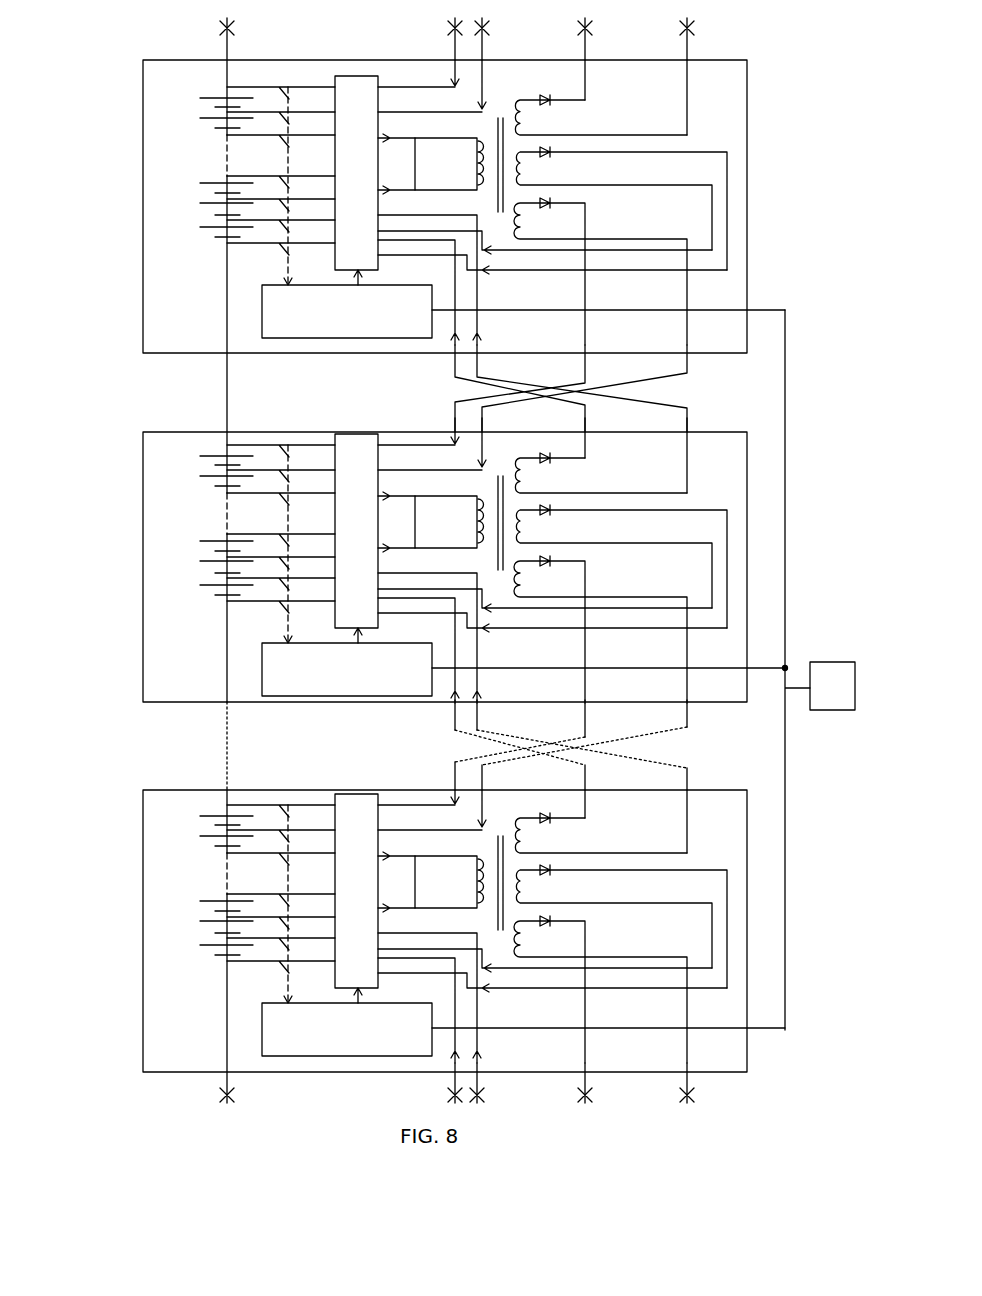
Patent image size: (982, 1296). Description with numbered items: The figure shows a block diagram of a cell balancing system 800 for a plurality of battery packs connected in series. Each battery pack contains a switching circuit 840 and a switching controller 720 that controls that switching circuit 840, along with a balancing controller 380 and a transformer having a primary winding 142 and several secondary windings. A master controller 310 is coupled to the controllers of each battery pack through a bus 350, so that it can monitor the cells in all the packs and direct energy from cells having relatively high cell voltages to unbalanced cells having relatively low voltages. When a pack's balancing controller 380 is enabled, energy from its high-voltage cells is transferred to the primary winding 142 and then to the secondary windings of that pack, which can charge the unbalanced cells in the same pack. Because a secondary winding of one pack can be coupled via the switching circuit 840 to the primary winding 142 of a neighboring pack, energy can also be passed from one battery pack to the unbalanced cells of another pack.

The cell balancing system 800 is at (135, 61).
The switching circuit 840 is at (356, 532).
The switching controller 720 is at (347, 670).
The balancing controller 380 is at (446, 523).
The primary winding 142 is at (491, 143).
The bus 350 is at (786, 652).
The master controller 310 is at (832, 686).